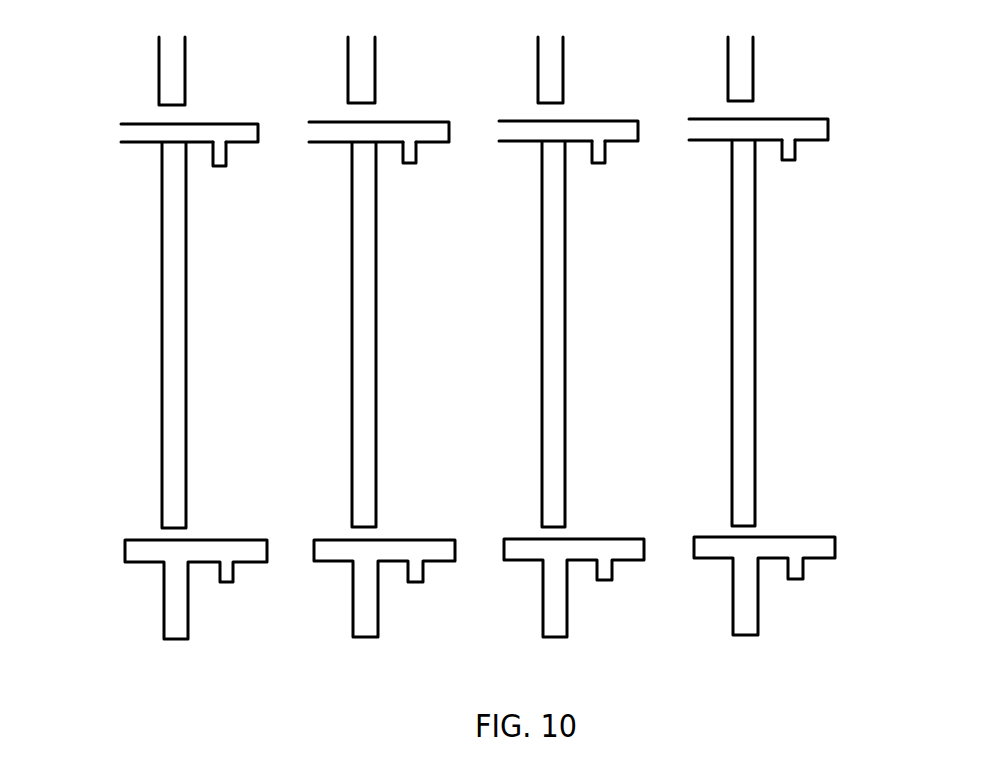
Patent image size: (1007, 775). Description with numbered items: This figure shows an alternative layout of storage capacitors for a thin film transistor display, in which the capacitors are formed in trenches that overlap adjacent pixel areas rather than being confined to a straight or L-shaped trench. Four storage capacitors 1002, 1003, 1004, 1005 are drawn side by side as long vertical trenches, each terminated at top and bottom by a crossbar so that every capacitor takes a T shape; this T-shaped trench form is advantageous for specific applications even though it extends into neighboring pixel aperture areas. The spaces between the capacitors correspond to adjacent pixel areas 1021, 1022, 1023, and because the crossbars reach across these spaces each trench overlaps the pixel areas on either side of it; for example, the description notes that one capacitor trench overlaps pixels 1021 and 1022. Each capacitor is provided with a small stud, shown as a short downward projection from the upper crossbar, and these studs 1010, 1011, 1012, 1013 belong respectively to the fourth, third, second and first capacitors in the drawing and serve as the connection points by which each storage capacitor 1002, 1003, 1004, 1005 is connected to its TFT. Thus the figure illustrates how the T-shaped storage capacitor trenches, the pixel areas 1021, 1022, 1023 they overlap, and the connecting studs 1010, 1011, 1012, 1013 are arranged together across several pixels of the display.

The storage capacitor 1002 is at (161, 253).
The storage capacitor 1003 is at (352, 250).
The storage capacitor 1004 is at (541, 262).
The storage capacitor 1005 is at (731, 250).
The stud 1010 is at (797, 153).
The stud 1011 is at (607, 155).
The stud 1012 is at (418, 155).
The stud 1013 is at (228, 157).
The pixel area 1021 is at (253, 349).
The pixel area 1022 is at (465, 368).
The pixel area 1023 is at (652, 368).